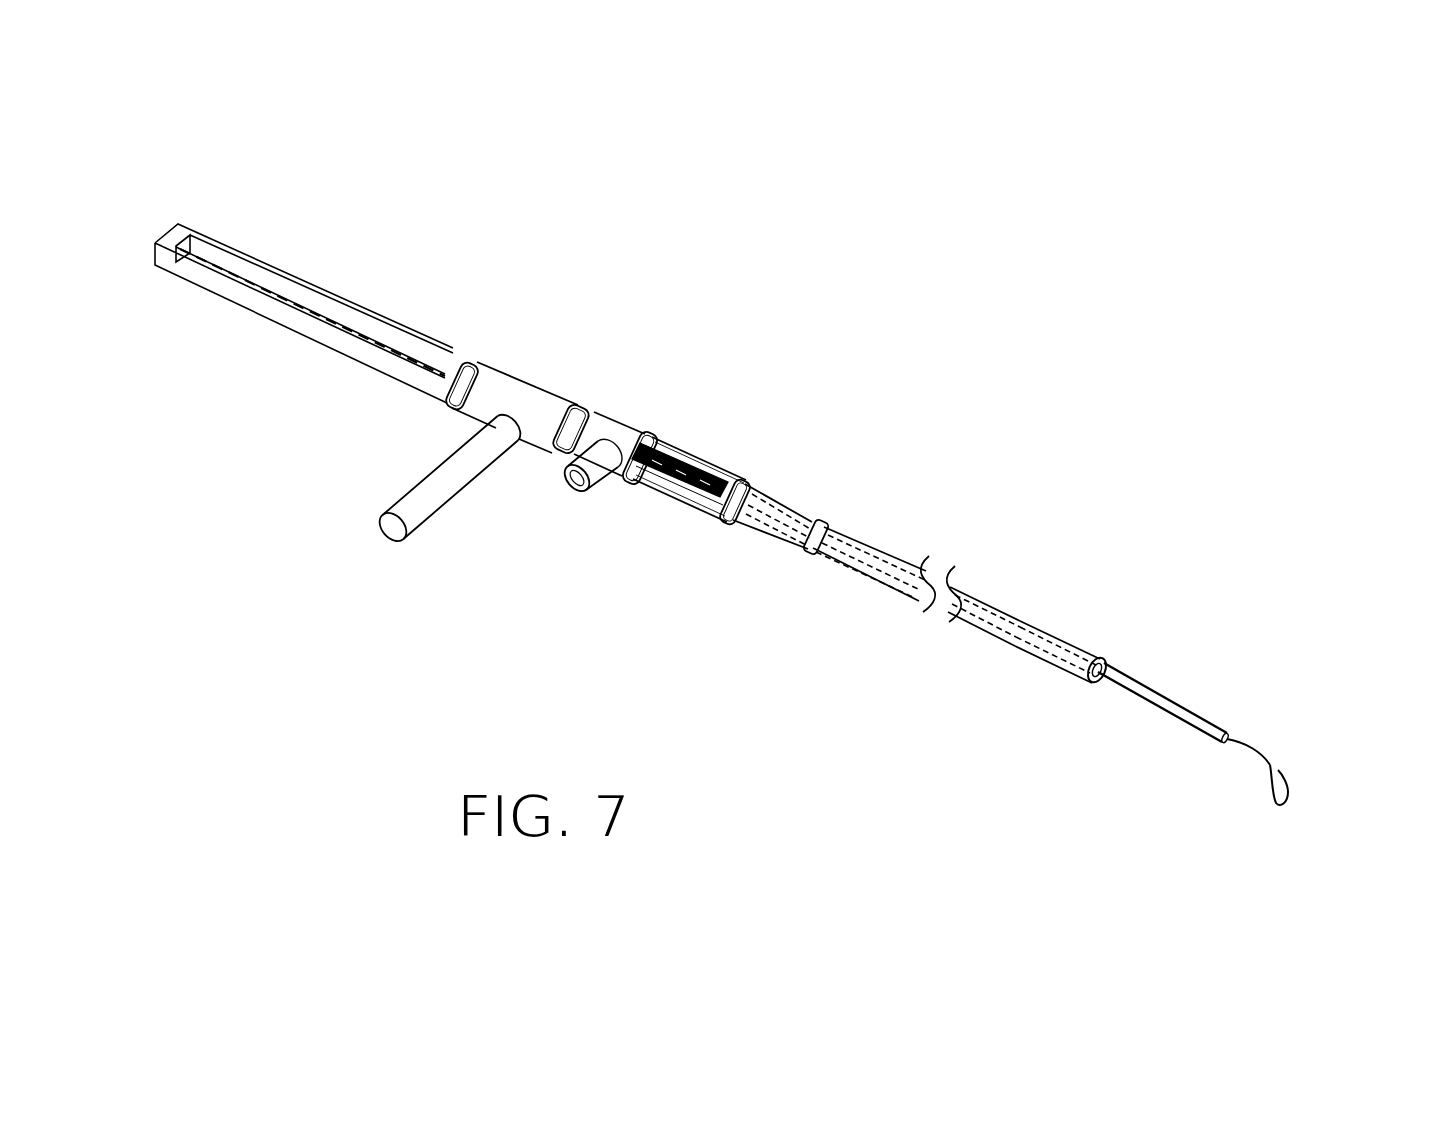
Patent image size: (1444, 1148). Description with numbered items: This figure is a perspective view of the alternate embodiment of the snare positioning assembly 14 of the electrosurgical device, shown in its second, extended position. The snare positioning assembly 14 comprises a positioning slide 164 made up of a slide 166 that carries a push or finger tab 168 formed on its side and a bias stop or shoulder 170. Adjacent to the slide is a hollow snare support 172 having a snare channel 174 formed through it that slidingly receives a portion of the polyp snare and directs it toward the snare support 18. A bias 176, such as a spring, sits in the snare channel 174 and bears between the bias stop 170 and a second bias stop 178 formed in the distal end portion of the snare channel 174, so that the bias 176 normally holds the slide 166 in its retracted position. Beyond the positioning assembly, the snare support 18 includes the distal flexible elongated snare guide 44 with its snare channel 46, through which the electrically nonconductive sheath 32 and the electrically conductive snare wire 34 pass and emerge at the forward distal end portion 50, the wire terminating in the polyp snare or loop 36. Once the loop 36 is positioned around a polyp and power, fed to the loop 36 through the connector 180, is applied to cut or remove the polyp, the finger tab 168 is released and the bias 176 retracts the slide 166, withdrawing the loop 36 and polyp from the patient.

The snare positioning assembly 14 is at (565, 380).
The snare support 18 is at (863, 492).
The electrically nonconductive sheath 32 is at (1135, 683).
The electrically conductive snare wire 34 is at (1190, 708).
The polyp snare or loop 36 is at (1283, 773).
The distal flexible elongated snare guide 44 is at (1047, 630).
The snare channel 46 is at (983, 603).
The forward distal end portion 50 is at (1067, 663).
The positioning slide 164 is at (632, 402).
The slide 166 is at (495, 390).
The push or finger tab 168 is at (425, 508).
The bias stop or shoulder 170 is at (637, 440).
The hollow snare support 172 is at (763, 432).
The snare channel 174 is at (748, 481).
The bias 176 is at (677, 483).
The second bias stop 178 is at (720, 500).
The connector 180 is at (577, 480).